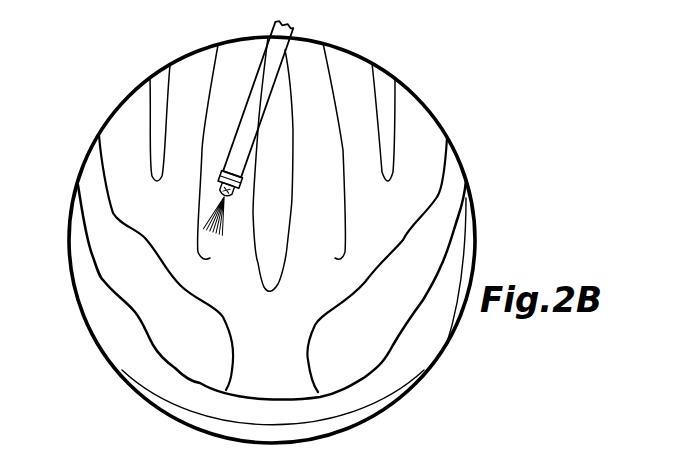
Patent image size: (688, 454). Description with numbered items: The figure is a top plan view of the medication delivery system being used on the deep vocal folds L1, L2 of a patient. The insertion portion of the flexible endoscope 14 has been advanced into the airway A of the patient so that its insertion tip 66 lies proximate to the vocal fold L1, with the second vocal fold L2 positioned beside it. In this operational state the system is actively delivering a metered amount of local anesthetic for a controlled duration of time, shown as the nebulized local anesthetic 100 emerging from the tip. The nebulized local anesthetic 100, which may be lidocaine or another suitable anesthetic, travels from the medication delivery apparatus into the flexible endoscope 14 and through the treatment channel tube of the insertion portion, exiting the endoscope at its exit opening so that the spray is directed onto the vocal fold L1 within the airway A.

The flexible endoscope 14 is at (198, 40).
The insertion tip 66 is at (220, 186).
The nebulized local anesthetic 100 is at (212, 219).
The airway A is at (291, 204).
The vocal fold L1 is at (228, 241).
The vocal fold L2 is at (316, 241).